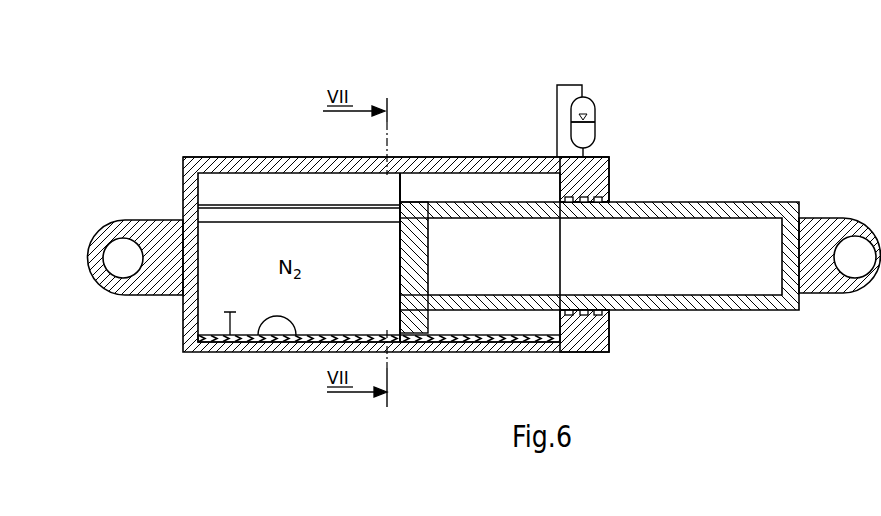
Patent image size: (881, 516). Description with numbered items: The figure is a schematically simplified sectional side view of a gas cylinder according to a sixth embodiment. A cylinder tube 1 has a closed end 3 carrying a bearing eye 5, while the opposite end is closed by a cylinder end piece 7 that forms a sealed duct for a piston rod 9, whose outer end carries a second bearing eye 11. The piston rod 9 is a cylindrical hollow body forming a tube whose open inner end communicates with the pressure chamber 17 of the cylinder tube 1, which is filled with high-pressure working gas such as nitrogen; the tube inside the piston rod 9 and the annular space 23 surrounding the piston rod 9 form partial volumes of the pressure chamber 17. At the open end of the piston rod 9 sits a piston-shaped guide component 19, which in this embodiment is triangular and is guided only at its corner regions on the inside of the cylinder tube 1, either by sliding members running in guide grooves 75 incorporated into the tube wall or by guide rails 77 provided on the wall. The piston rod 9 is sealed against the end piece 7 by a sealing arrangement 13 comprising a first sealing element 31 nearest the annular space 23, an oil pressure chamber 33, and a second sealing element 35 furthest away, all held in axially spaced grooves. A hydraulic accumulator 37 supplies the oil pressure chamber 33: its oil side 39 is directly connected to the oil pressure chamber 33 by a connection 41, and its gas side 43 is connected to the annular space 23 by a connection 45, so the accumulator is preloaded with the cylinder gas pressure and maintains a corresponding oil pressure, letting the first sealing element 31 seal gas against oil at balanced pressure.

The cylinder tube 1 is at (408, 165).
The closed end 3 is at (183, 183).
The bearing eye 5 is at (125, 276).
The cylinder end piece 7 is at (610, 333).
The piston rod 9 is at (678, 208).
The bearing eye 11 is at (853, 268).
The sealing arrangement 13 is at (572, 291).
The pressure chamber 17 is at (229, 335).
The guide component 19 is at (418, 317).
The annular space 23 is at (448, 183).
The first sealing element 31 is at (571, 203).
The oil pressure chamber 33 is at (584, 204).
The second sealing element 35 is at (598, 203).
The hydraulic accumulator 37 is at (595, 101).
The oil side 39 is at (588, 137).
The connection 41 is at (608, 176).
The gas side 43 is at (572, 105).
The connection 45 is at (556, 128).
The guide grooves 75 is at (260, 215).
The guide rails 77 is at (255, 338).